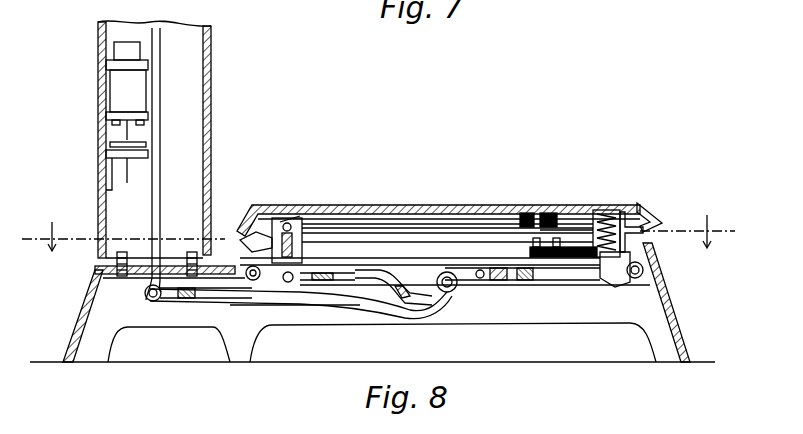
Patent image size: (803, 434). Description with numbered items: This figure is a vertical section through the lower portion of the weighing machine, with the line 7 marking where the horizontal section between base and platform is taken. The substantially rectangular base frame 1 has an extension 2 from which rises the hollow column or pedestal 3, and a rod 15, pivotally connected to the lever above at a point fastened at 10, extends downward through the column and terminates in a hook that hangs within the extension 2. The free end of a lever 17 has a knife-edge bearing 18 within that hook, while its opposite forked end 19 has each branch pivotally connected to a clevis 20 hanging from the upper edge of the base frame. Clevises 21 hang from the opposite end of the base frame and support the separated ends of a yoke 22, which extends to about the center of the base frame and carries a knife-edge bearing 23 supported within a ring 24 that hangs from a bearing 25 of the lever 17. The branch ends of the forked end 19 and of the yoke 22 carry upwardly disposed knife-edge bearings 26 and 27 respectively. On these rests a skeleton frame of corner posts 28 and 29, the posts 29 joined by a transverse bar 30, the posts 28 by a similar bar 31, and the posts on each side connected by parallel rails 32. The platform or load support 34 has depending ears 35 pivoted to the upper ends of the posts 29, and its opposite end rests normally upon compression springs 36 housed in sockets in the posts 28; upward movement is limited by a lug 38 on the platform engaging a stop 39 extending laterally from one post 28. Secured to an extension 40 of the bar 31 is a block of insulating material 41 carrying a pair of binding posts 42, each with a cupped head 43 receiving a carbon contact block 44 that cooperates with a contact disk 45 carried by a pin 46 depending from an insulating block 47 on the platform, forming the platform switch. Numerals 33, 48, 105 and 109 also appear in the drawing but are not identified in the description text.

The base frame 1 is at (545, 308).
The extension 2 is at (206, 306).
The hollow column or pedestal 3 is at (165, 147).
The bifurcated bracket 7 is at (375, 233).
The fastening point 10 is at (136, 280).
The rod 15 is at (160, 68).
The lever 17 is at (276, 306).
The knife-edge bearing 18 is at (145, 297).
The forked end 19 is at (530, 282).
The clevis 20 is at (650, 255).
The clevises 21 is at (242, 240).
The yoke 22 is at (378, 272).
The knife-edge bearing 23 is at (440, 288).
The ring 24 is at (450, 292).
The bearing 25 is at (456, 290).
The knife-edge bearings 26 is at (632, 280).
The knife-edge bearings 27 is at (300, 273).
The corner posts 28 is at (606, 282).
The corner posts 29 is at (304, 226).
The transverse bar 30 is at (298, 240).
The transverse bar 31 is at (604, 210).
The parallel rails 32 is at (447, 243).
The guide plate 33 is at (449, 227).
The platform or load support 34 is at (466, 205).
The depending ears 35 is at (292, 222).
The compression springs 36 is at (643, 205).
The lug 38 is at (648, 228).
The stop 39 is at (655, 216).
The extension 40 is at (645, 232).
The block of insulating material 41 is at (484, 280).
The binding posts 42 is at (558, 258).
The cupped head 43 is at (500, 262).
The carbon contact block 44 is at (535, 258).
The contact disk 45 is at (447, 222).
The pin 46 is at (566, 222).
The block of insulating material 47 is at (552, 213).
The contact 48 is at (527, 213).
The cylinder 105 is at (118, 84).
The valve 109 is at (126, 50).